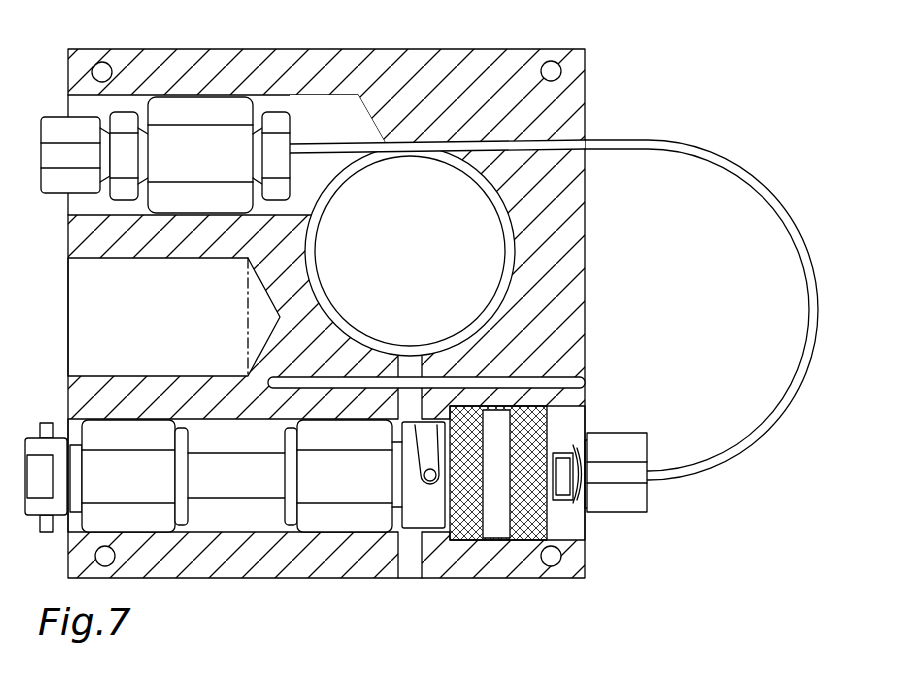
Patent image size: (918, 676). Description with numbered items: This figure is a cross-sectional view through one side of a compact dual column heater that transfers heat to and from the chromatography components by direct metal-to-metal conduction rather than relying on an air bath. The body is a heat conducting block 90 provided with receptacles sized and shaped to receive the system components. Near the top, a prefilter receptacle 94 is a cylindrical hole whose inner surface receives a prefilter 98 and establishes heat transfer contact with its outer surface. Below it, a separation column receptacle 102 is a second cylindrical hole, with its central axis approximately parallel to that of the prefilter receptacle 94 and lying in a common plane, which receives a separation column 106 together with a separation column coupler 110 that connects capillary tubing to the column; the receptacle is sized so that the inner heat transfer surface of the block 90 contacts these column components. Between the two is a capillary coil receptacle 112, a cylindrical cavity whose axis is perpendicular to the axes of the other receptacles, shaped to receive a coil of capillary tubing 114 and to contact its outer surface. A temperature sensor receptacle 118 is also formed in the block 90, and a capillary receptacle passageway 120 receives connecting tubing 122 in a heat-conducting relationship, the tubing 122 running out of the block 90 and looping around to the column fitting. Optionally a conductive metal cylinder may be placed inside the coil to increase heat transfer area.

The heat conducting block 90 is at (352, 333).
The prefilter receptacle 94 is at (345, 129).
The prefilter 98 is at (215, 170).
The separation column receptacle 102 is at (238, 523).
The separation column 106 is at (262, 491).
The separation column coupler 110 is at (498, 530).
The capillary coil receptacle 112 is at (425, 260).
The coil of capillary tubing 114 is at (503, 199).
The temperature sensor receptacle 118 is at (553, 373).
The capillary receptacle passageway 120 is at (566, 139).
The connecting tubing 122 is at (806, 303).